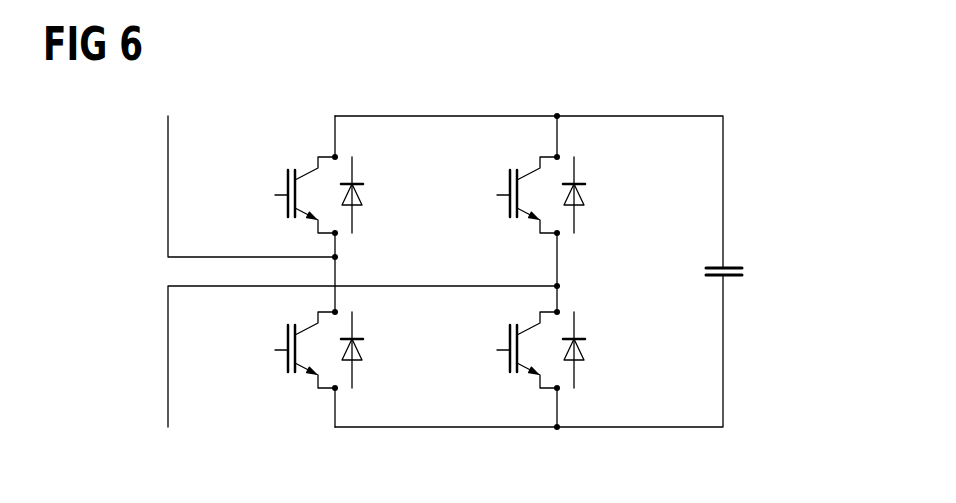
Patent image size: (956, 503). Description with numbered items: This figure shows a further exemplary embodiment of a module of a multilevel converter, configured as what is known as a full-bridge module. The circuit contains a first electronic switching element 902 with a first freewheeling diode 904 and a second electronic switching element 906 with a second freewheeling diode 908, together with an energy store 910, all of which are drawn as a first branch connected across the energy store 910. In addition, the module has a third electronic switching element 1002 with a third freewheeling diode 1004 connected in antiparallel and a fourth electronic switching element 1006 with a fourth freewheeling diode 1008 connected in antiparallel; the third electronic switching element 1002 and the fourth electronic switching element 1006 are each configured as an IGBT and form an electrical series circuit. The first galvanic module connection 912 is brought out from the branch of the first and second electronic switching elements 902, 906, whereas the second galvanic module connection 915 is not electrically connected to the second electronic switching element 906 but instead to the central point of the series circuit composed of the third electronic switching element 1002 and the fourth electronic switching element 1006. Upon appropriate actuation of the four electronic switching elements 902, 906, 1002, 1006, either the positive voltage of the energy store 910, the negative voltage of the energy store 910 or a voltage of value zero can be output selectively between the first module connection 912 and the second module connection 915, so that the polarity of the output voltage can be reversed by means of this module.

The first module connection 912 is at (168, 178).
The second module connection 915 is at (168, 382).
The energy store 910 is at (745, 272).
The first electronic switching element 902 is at (275, 195).
The first freewheeling diode 904 is at (363, 195).
The second electronic switching element 906 is at (275, 350).
The second freewheeling diode 908 is at (363, 350).
The third electronic switching element 1002 is at (497, 195).
The third freewheeling diode 1004 is at (585, 195).
The fourth electronic switching element 1006 is at (497, 350).
The fourth freewheeling diode 1008 is at (585, 350).